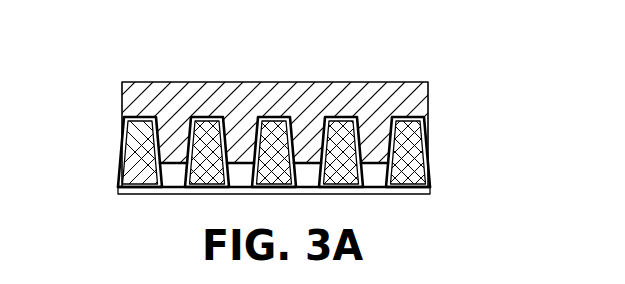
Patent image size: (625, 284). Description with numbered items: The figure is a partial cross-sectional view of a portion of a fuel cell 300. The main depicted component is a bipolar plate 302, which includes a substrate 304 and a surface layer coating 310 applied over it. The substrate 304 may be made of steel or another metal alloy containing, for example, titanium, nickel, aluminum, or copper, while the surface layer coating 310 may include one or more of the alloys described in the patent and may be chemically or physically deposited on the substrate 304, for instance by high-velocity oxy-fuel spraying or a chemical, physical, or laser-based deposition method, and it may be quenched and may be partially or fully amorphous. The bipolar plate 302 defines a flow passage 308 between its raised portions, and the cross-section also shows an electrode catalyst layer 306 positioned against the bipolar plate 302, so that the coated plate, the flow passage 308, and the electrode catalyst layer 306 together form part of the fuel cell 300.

The fuel cell 300 is at (271, 118).
The bipolar plate 302 is at (450, 138).
The substrate 304 is at (122, 100).
The electrode catalyst layer 306 is at (372, 194).
The flow passage 308 is at (202, 183).
The surface layer coating 310 is at (122, 174).